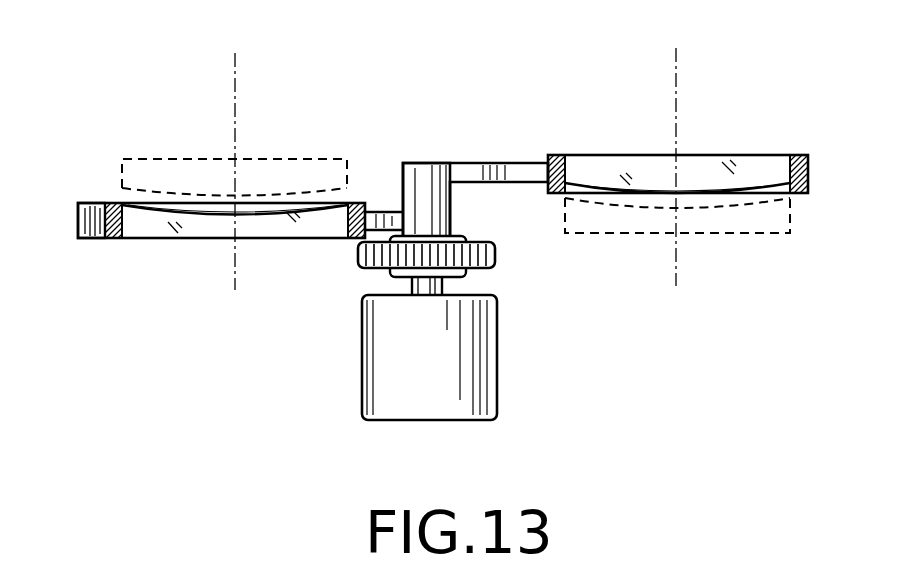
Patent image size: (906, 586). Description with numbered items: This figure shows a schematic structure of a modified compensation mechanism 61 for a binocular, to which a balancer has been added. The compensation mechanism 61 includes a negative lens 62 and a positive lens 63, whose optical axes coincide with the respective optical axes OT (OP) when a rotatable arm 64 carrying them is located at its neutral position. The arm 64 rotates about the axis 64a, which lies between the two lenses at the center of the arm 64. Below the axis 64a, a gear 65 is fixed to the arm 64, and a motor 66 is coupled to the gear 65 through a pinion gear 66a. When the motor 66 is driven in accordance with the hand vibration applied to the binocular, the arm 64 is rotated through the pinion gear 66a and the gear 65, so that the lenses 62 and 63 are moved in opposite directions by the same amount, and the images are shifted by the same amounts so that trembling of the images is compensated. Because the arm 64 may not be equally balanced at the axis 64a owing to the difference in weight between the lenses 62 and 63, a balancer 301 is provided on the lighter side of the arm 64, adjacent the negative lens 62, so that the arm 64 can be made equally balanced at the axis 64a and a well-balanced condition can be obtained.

The compensation mechanism 61 is at (498, 86).
The negative lens 62 is at (213, 228).
The positive lens 63 is at (707, 167).
The rotatable arm 64 is at (513, 174).
The axis 64a is at (422, 197).
The gear 65 is at (495, 253).
The motor 66 is at (468, 365).
The pinion gear 66a is at (400, 284).
The balancer 301 is at (92, 203).